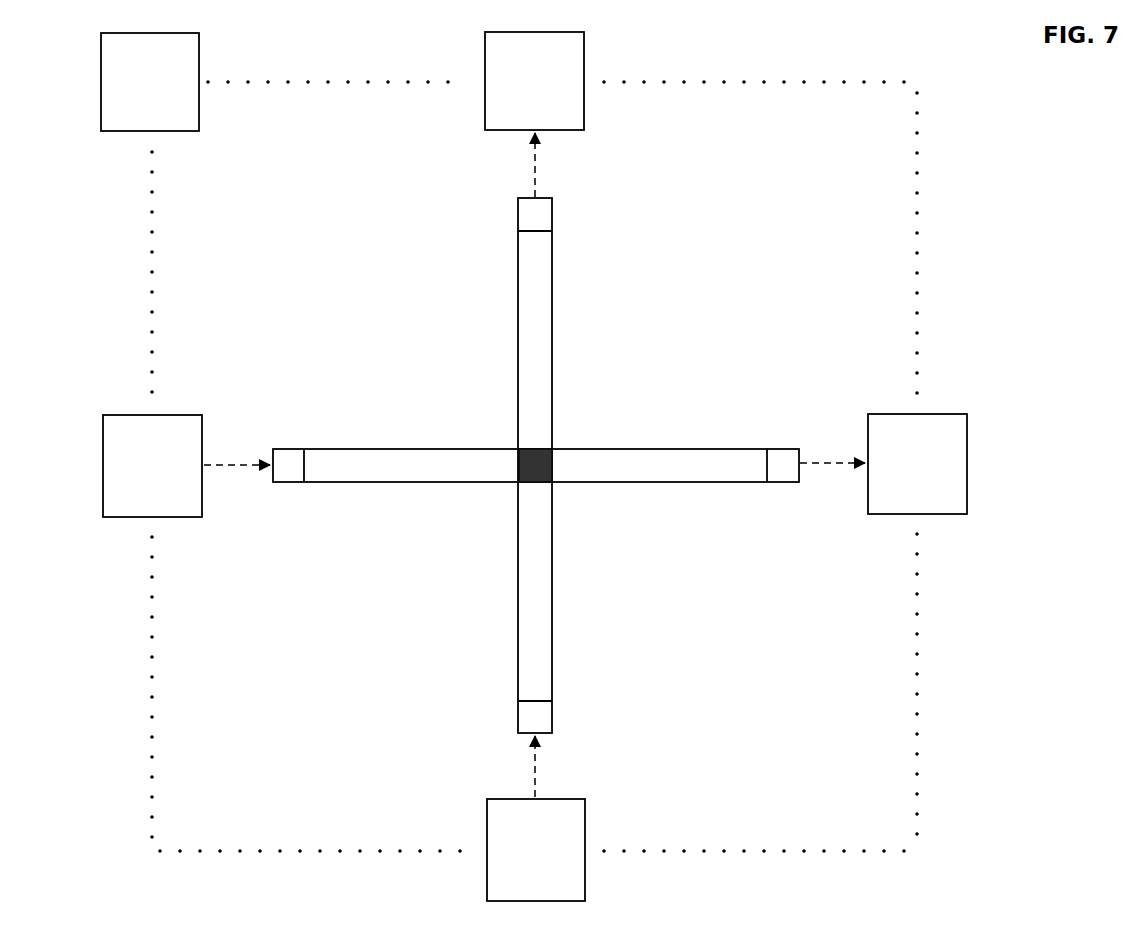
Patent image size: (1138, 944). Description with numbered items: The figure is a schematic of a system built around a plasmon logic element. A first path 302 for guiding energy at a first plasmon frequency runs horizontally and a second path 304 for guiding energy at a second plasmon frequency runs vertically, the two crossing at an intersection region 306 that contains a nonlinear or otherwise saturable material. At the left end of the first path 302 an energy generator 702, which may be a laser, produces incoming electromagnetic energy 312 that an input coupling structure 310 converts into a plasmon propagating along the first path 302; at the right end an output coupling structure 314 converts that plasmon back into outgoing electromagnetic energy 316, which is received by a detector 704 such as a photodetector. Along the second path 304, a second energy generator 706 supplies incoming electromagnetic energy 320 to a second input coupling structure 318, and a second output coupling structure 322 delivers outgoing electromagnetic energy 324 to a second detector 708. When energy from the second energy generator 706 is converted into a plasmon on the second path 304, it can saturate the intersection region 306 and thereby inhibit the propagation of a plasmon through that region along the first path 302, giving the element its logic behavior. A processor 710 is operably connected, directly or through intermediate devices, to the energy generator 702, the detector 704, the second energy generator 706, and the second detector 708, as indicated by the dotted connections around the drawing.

The first path 302 is at (390, 465).
The second path 304 is at (535, 567).
The intersection region 306 is at (541, 461).
The input coupling structure 310 is at (290, 467).
The incoming electromagnetic energy 312 is at (237, 451).
The output coupling structure 314 is at (783, 465).
The outgoing electromagnetic energy 316 is at (832, 448).
The second input coupling structure 318 is at (536, 716).
The incoming electromagnetic energy 320 is at (509, 766).
The second output coupling structure 322 is at (533, 213).
The outgoing electromagnetic energy 324 is at (565, 165).
The energy generator 702 is at (152, 466).
The detector 704 is at (917, 464).
The second energy generator 706 is at (536, 850).
The second detector 708 is at (534, 81).
The processor 710 is at (150, 82).